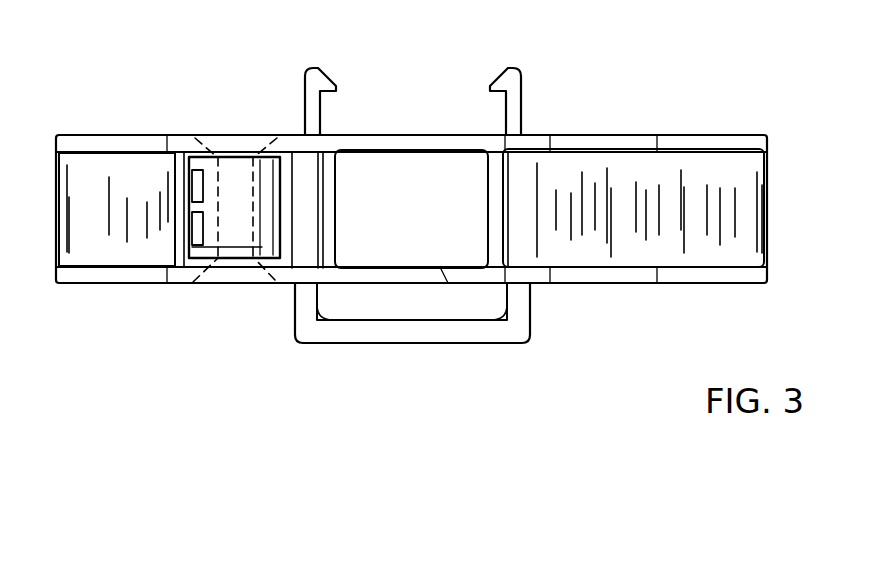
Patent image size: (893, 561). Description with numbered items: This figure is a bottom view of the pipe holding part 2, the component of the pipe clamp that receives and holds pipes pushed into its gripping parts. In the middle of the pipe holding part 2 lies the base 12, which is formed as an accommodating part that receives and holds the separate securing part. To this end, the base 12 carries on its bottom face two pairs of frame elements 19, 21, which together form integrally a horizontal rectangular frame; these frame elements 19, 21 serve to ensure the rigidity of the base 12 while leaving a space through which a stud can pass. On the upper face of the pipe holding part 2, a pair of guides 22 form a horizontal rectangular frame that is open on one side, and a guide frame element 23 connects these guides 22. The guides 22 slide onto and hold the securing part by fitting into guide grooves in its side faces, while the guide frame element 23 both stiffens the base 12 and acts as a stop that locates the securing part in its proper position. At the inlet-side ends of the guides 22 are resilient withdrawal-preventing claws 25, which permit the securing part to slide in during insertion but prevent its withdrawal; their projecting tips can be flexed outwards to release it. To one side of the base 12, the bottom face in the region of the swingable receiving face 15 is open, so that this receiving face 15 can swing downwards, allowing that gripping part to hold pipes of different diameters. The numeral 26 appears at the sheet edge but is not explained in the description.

The pipe holding part 2 is at (593, 121).
The base 12 is at (382, 124).
The swingable receiving face 15 is at (235, 180).
The frame element 19 is at (437, 152).
The frame element 21 is at (494, 210).
The guide 22 is at (330, 320).
The guide frame element 23 is at (388, 333).
The withdrawal-preventing claw 25 is at (320, 80).
The element 26 is at (601, 550).